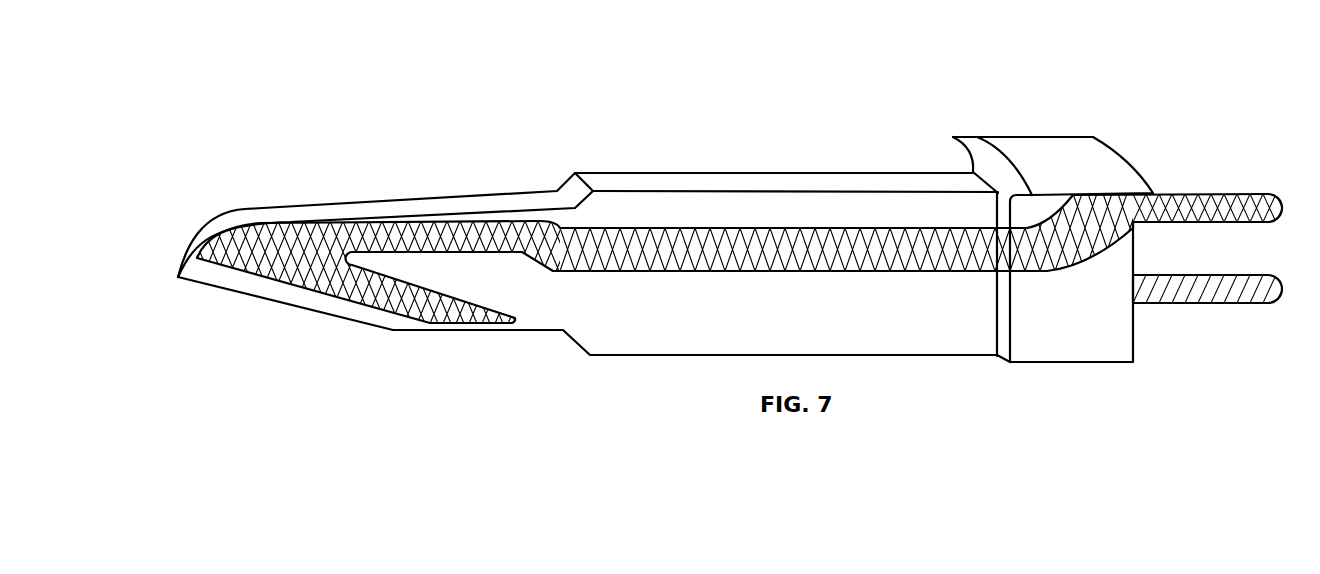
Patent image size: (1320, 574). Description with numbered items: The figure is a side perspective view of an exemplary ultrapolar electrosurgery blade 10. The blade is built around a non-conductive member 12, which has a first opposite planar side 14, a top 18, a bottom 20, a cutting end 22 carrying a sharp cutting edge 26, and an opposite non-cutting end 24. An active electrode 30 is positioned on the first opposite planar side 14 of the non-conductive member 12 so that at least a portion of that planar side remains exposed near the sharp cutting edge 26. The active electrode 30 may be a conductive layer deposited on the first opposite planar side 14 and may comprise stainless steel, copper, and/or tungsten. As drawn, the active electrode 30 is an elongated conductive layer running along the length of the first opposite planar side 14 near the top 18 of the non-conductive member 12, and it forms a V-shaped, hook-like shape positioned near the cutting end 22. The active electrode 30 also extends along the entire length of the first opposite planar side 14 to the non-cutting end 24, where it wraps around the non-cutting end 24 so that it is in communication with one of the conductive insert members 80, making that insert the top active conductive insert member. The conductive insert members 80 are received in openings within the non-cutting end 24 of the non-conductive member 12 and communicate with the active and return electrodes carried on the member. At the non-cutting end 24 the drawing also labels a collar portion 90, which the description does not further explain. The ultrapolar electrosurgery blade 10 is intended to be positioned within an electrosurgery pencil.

The ultrapolar electrosurgery blade 10 is at (838, 128).
The non-conductive member 12 is at (620, 214).
The first opposite planar side 14 is at (773, 311).
The top 18 is at (763, 189).
The bottom 20 is at (661, 357).
The cutting end 22 is at (179, 277).
The non-cutting end 24 is at (1133, 256).
The sharp cutting edge 26 is at (300, 307).
The active electrode 30 is at (265, 257).
The conductive insert members 80 is at (1207, 193).
The collar 90 is at (1090, 152).